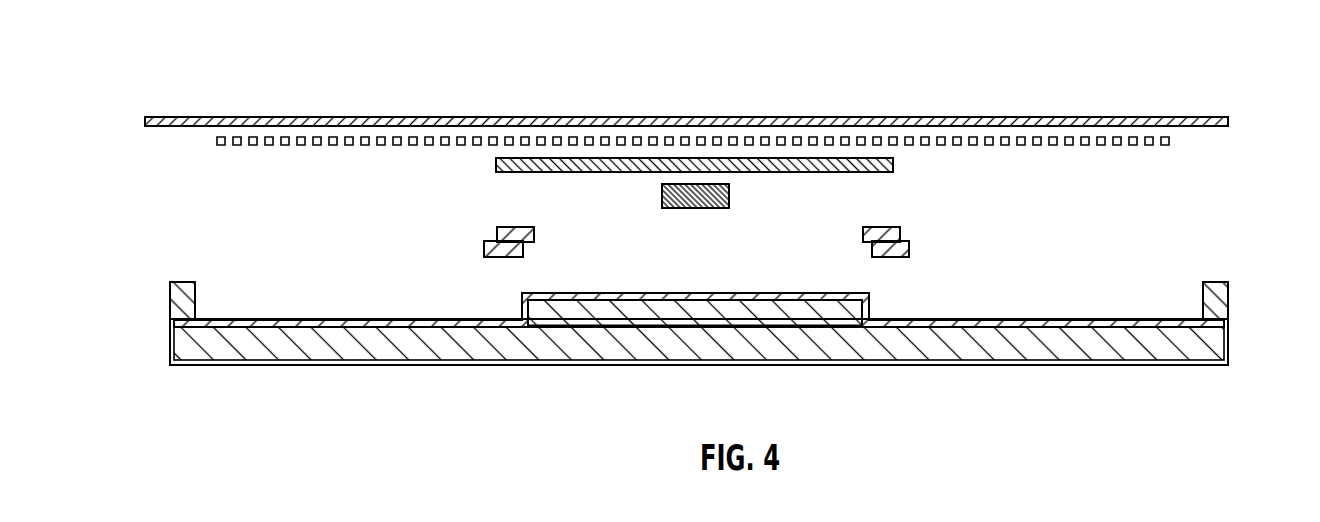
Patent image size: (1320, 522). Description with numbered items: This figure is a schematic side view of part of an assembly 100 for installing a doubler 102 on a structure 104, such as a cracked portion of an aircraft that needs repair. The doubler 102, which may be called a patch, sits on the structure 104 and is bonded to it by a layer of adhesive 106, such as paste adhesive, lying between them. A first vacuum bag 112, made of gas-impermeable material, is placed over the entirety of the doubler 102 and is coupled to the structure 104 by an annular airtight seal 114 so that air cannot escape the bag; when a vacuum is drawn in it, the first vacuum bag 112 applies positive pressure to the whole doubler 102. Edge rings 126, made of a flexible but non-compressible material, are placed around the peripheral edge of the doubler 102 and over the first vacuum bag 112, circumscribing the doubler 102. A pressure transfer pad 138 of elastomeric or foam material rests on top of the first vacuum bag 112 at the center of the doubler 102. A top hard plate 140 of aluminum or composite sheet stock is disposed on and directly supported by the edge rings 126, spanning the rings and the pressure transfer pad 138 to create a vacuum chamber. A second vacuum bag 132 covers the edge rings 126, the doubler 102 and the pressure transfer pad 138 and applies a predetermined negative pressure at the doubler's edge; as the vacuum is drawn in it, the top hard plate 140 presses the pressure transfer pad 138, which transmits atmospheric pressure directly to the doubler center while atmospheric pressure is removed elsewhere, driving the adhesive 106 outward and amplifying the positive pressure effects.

The assembly 100 is at (1118, 65).
The second vacuum bag 132 is at (1233, 117).
The top hard plate 140 is at (893, 165).
The pressure transfer pad 138 is at (729, 196).
The edge rings 126 is at (922, 236).
The annular airtight seal 114 is at (179, 300).
The first vacuum bag 112 is at (1233, 276).
The structure 104 is at (293, 347).
The doubler 102 is at (557, 318).
The adhesive 106 is at (683, 327).